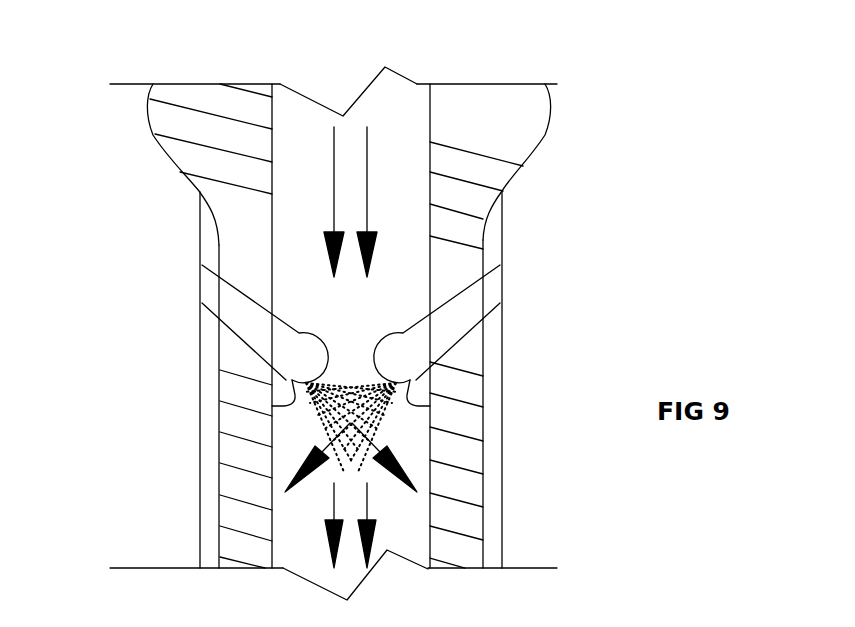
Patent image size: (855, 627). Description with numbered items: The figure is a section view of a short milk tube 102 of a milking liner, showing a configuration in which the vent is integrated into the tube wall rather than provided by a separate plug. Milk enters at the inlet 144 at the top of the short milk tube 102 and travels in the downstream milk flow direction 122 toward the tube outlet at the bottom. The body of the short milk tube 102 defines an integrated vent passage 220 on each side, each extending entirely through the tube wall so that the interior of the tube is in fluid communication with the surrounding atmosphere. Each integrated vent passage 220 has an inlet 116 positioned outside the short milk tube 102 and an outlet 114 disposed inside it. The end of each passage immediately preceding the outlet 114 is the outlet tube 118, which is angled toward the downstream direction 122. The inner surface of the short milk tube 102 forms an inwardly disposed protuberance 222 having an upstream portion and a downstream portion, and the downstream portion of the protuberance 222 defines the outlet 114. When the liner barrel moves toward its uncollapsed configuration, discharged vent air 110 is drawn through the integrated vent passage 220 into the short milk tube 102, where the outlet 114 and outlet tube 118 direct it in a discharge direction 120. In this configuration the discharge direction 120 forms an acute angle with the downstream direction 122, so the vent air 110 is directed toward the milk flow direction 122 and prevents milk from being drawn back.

The inlet 144 is at (393, 103).
The inwardly disposed protuberance 222 is at (287, 327).
The inlet 116 is at (205, 286).
The integrated vent passage 220 is at (215, 298).
The outlet tube 118 is at (273, 353).
The outlet 114 is at (296, 398).
The discharged vent air 110 is at (312, 410).
The discharge direction 120 is at (327, 427).
The milk flow direction 122 is at (330, 512).
The short milk tube 102 is at (447, 543).